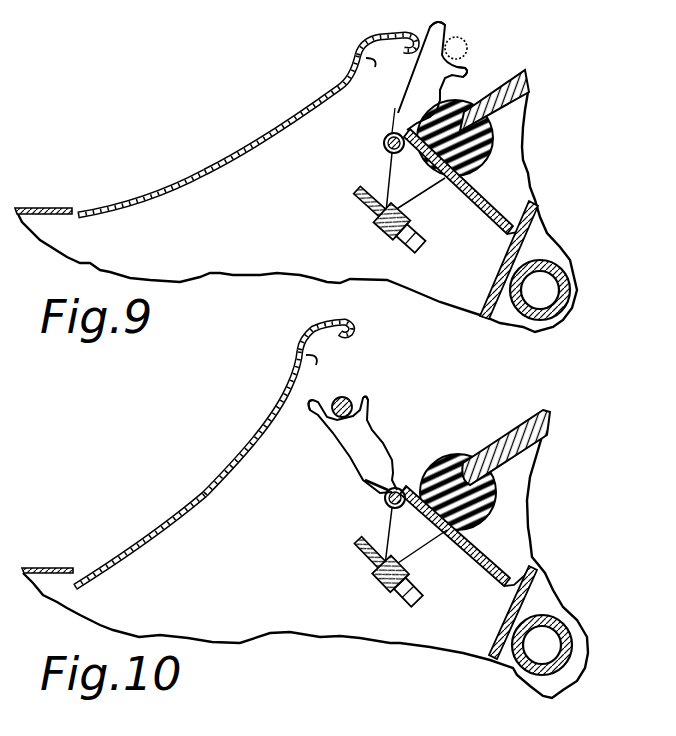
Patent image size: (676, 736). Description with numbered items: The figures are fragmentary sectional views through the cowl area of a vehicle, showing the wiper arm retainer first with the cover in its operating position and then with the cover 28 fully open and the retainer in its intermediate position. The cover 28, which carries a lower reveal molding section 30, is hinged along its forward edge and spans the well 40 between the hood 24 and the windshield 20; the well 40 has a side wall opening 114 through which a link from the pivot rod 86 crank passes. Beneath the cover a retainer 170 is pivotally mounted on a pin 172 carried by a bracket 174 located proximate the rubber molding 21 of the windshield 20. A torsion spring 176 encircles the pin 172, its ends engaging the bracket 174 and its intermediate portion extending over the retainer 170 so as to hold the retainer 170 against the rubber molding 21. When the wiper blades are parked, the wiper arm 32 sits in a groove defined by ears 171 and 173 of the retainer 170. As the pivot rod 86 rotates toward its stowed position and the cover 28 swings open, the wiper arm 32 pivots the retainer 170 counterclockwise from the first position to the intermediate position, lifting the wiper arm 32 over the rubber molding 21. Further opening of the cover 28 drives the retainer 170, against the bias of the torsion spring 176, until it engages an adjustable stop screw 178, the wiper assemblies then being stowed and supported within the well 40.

In FIG. 9, the windshield 20 is at (528, 82).
In FIG. 10, the windshield 20 is at (548, 419).
In FIG. 9, the rubber molding 21 is at (468, 98).
In FIG. 10, the rubber molding 21 is at (450, 462).
In FIG. 9, the hood 24 is at (57, 198).
In FIG. 10, the hood 24 is at (48, 568).
In FIG. 9, the cover 28 is at (305, 110).
In FIG. 10, the cover 28 is at (275, 407).
In FIG. 9, the lower reveal molding section 30 is at (388, 33).
In FIG. 10, the lower reveal molding section 30 is at (320, 327).
In FIG. 9, the wiper arm 32 is at (470, 36).
In FIG. 10, the wiper arm 32 is at (358, 391).
In FIG. 9, the well 40 is at (188, 197).
In FIG. 10, the well 40 is at (160, 547).
In FIG. 9, the pivot rod 86 is at (566, 280).
In FIG. 10, the pivot rod 86 is at (563, 635).
In FIG. 9, the side wall opening 114 is at (495, 283).
In FIG. 10, the side wall opening 114 is at (505, 626).
In FIG. 9, the retainer 170 is at (412, 88).
In FIG. 10, the retainer 170 is at (340, 442).
In FIG. 9, the ear 171 is at (442, 23).
In FIG. 10, the ear 171 is at (320, 393).
In FIG. 9, the pin 172 is at (386, 146).
In FIG. 10, the pin 172 is at (385, 500).
In FIG. 9, the ear 173 is at (472, 68).
In FIG. 10, the ear 173 is at (370, 400).
In FIG. 9, the bracket 174 is at (441, 178).
In FIG. 10, the bracket 174 is at (438, 533).
In FIG. 9, the torsion spring 176 is at (402, 155).
In FIG. 10, the torsion spring 176 is at (395, 510).
In FIG. 9, the adjustable stop screw 178 is at (413, 249).
In FIG. 10, the adjustable stop screw 178 is at (415, 598).